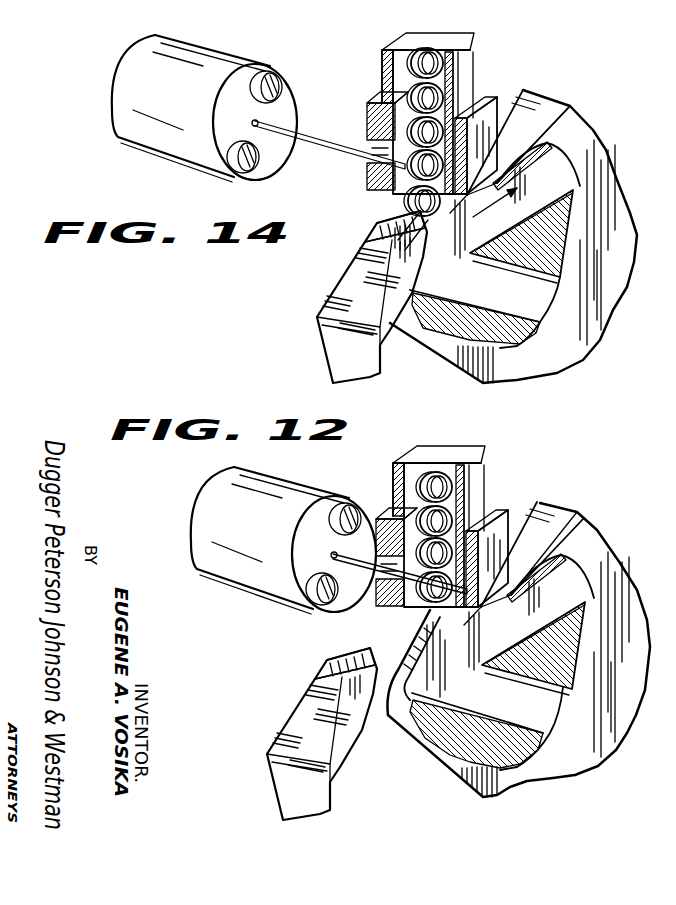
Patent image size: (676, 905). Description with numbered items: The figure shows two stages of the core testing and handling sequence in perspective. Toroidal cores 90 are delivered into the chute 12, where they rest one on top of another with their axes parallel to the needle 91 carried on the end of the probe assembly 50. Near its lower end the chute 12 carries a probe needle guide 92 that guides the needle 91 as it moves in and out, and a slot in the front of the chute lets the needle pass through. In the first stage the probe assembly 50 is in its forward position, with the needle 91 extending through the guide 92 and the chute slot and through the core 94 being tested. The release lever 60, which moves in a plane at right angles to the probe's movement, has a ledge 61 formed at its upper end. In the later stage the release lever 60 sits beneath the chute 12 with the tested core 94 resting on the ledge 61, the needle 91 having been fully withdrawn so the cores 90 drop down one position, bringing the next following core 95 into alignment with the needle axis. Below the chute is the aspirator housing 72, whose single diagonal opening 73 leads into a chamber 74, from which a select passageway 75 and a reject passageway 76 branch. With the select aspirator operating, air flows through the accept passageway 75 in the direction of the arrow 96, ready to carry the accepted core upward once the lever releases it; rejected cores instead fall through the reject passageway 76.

In FIG. 12, the chute 12 is at (455, 449).
In FIG. 14, the probe assembly 50 is at (211, 62).
In FIG. 12, the probe assembly 50 is at (269, 530).
In FIG. 14, the release lever 60 is at (317, 334).
In FIG. 12, the release lever 60 is at (284, 780).
In FIG. 14, the ledge 61 is at (388, 222).
In FIG. 12, the ledge 61 is at (341, 663).
In FIG. 14, the aspirator housing 72 is at (463, 323).
In FIG. 12, the aspirator housing 72 is at (455, 732).
In FIG. 12, the opening 73 is at (413, 643).
In FIG. 12, the chamber 74 is at (466, 683).
In FIG. 14, the select passageway 75 is at (561, 187).
In FIG. 12, the select passageway 75 is at (571, 605).
In FIG. 14, the reject passageway 76 is at (537, 305).
In FIG. 12, the reject passageway 76 is at (541, 726).
In FIG. 14, the toroidal cores 90 is at (456, 88).
In FIG. 14, the needle 91 is at (348, 145).
In FIG. 12, the needle 91 is at (333, 556).
In FIG. 12, the probe needle guide 92 is at (388, 516).
In FIG. 14, the core 94 is at (435, 219).
In FIG. 12, the core 94 is at (422, 611).
In FIG. 14, the next following core 95 is at (470, 150).
In FIG. 12, the next following core 95 is at (473, 530).
In FIG. 14, the arrow 96 is at (520, 217).